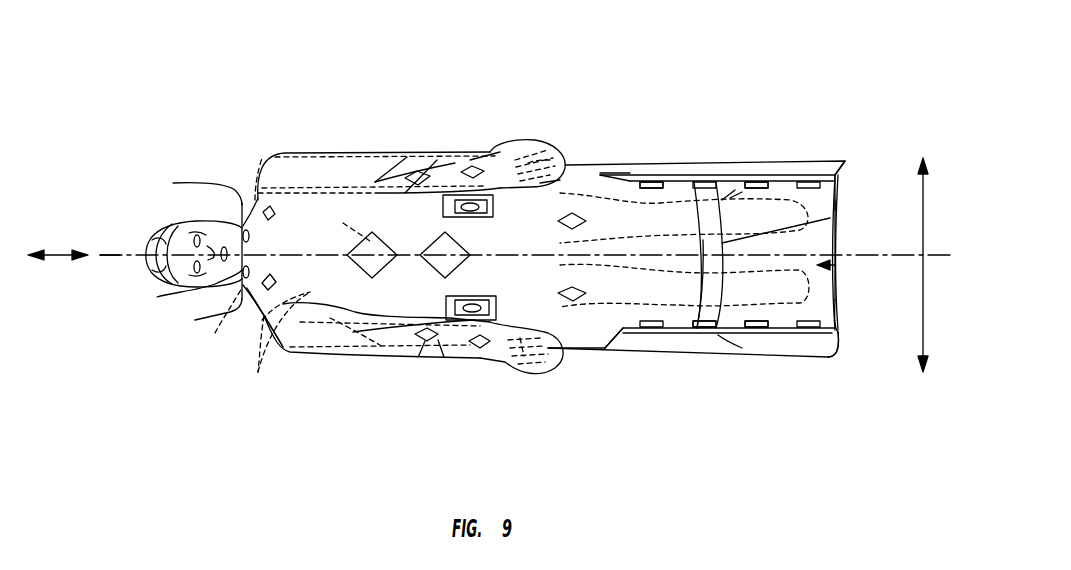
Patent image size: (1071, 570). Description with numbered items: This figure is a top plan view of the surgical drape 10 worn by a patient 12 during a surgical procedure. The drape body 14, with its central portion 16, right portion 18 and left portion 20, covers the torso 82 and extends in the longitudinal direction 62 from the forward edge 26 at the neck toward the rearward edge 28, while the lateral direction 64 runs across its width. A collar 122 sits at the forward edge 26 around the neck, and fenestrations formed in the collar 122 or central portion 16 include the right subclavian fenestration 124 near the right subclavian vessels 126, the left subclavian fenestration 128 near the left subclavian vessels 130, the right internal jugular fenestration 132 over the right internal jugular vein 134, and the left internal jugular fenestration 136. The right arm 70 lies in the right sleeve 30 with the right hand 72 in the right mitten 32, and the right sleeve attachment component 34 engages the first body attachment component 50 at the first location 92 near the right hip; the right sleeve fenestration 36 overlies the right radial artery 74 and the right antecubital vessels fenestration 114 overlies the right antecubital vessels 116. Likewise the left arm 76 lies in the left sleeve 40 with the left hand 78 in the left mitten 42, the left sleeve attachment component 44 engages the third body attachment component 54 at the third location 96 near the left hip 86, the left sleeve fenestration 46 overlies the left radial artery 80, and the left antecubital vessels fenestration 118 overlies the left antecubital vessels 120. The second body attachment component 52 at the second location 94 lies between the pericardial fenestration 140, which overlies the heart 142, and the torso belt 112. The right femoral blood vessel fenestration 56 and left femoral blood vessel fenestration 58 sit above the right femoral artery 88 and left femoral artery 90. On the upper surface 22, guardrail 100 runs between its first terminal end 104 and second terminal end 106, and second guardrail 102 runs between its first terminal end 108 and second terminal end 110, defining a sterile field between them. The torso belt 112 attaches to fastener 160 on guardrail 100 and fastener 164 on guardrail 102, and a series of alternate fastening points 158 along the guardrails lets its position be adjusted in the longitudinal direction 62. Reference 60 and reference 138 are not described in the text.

The surgical drape 10 is at (483, 239).
The patient 12 is at (742, 290).
The drape body 14 is at (822, 308).
The central portion 16 is at (830, 218).
The right portion 18 is at (780, 354).
The left portion 20 is at (795, 164).
The upper surface 22 is at (830, 268).
The forward edge 26 is at (243, 203).
The rearward edge 28 is at (837, 245).
The right sleeve 30 is at (318, 354).
The right mitten 32 is at (548, 370).
The right sleeve attachment component 34 is at (463, 312).
The right sleeve fenestration 36 is at (482, 348).
The left sleeve 40 is at (367, 152).
The left mitten 42 is at (556, 157).
The left sleeve attachment component 44 is at (493, 205).
The left sleeve fenestration 46 is at (476, 168).
The first body attachment component 50 is at (446, 297).
The second body attachment component 52 is at (432, 263).
The third body attachment component 54 is at (443, 212).
The right femoral blood vessel fenestration 56 is at (586, 296).
The left femoral blood vessel fenestration 58 is at (586, 222).
The centerline 60 is at (120, 255).
The longitudinal direction 62 is at (52, 252).
The lateral direction 64 is at (924, 280).
The right arm 70 is at (380, 345).
The right hand 72 is at (524, 356).
The right radial artery 74 is at (432, 340).
The left arm 76 is at (407, 157).
The left hand 78 is at (533, 153).
The left radial artery 80 is at (470, 160).
The torso 82 is at (258, 372).
The left hip 86 is at (505, 160).
The right femoral artery 88 is at (590, 338).
The left femoral artery 90 is at (570, 185).
The first location 92 is at (496, 304).
The second location 94 is at (433, 244).
The third location 96 is at (473, 217).
The guardrail 100 is at (673, 328).
The second guardrail 102 is at (660, 180).
The first terminal end 104 is at (623, 330).
The second terminal end 106 is at (833, 335).
The first terminal end 108 is at (622, 177).
The second terminal end 110 is at (846, 165).
The torso belt 112 is at (838, 206).
The right antecubital vessels fenestration 114 is at (418, 357).
The right antecubital vessels 116 is at (444, 357).
The left antecubital vessels fenestration 118 is at (437, 160).
The left antecubital vessels 120 is at (418, 172).
The collar 122 is at (191, 273).
The right subclavian fenestration 124 is at (253, 316).
The right subclavian vessels 126 is at (215, 333).
The left subclavian fenestration 128 is at (275, 216).
The left subclavian vessels 130 is at (262, 158).
The right internal jugular fenestration 132 is at (195, 320).
The right internal jugular vein 134 is at (276, 278).
The left internal jugular fenestration 136 is at (173, 183).
The collar fastener 138 is at (244, 237).
The pericardial fenestration 140 is at (385, 268).
The heart 142 is at (325, 198).
The alternate fastening points 158 is at (752, 180).
The fastener 160 is at (699, 330).
The fastener 164 is at (698, 180).